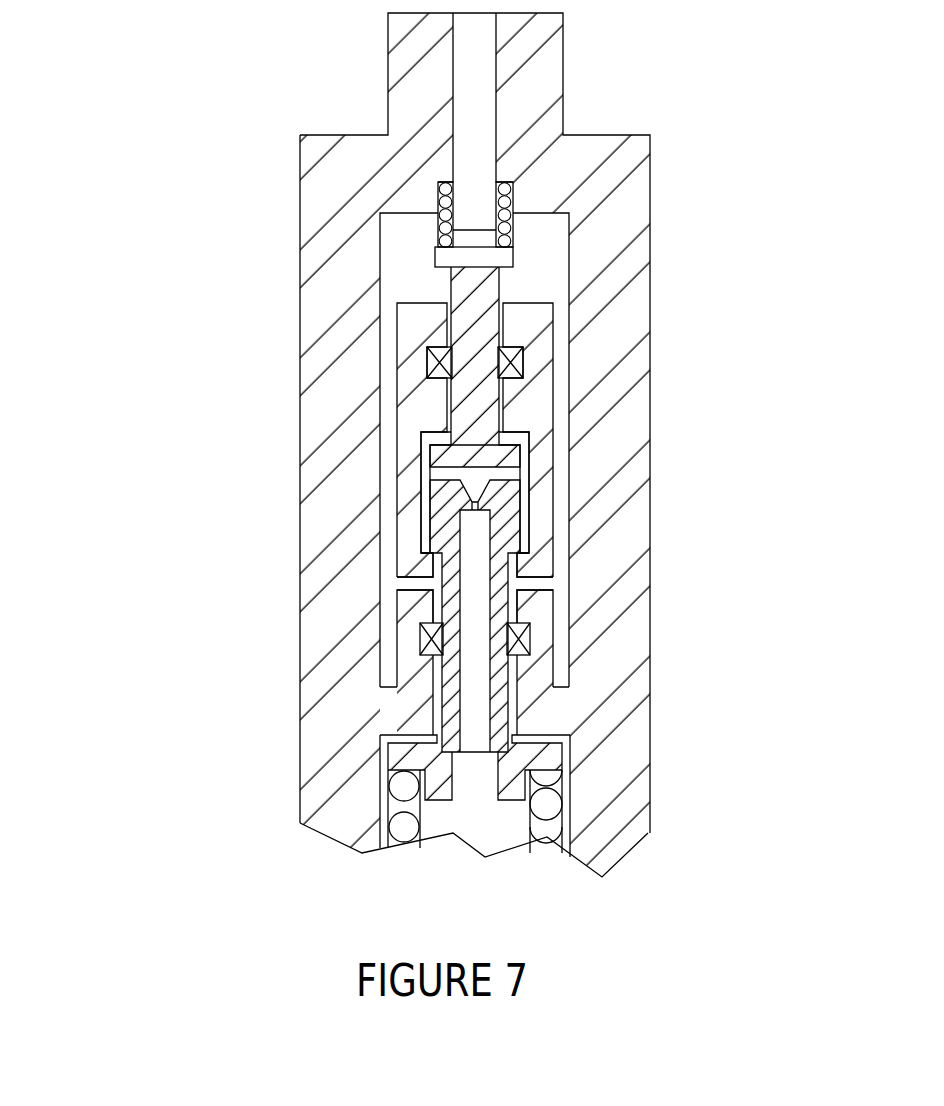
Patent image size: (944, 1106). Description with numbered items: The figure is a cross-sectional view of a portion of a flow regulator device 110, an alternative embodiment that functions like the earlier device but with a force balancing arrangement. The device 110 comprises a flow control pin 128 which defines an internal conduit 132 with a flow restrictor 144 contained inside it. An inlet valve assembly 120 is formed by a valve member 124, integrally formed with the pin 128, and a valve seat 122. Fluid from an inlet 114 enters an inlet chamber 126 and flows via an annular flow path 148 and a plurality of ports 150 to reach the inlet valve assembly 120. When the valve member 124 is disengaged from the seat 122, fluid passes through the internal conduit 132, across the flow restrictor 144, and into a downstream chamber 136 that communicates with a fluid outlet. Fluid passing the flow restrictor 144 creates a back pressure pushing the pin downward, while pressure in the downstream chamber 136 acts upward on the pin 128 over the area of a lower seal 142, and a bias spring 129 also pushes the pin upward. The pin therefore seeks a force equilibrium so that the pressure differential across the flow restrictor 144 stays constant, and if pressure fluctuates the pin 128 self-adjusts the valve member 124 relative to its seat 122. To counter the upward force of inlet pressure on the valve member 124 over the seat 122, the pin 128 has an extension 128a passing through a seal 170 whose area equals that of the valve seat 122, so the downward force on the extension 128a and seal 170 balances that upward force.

The flow regulator device 110 is at (168, 105).
The inlet 114 is at (480, 72).
The inlet chamber 126 is at (553, 233).
The pin extension 128a is at (480, 300).
The seal 170 is at (443, 362).
The flow control pin 128 is at (467, 405).
The annular flow path 148 is at (387, 470).
The flow restrictor 144 is at (467, 508).
The valve member 124 is at (522, 520).
The inlet valve assembly 120 is at (539, 553).
The valve seat 122 is at (535, 570).
The ports 150 is at (400, 583).
The lower seal 142 is at (425, 647).
The internal conduit 132 is at (473, 706).
The bias spring 129 is at (395, 797).
The downstream chamber 136 is at (497, 828).